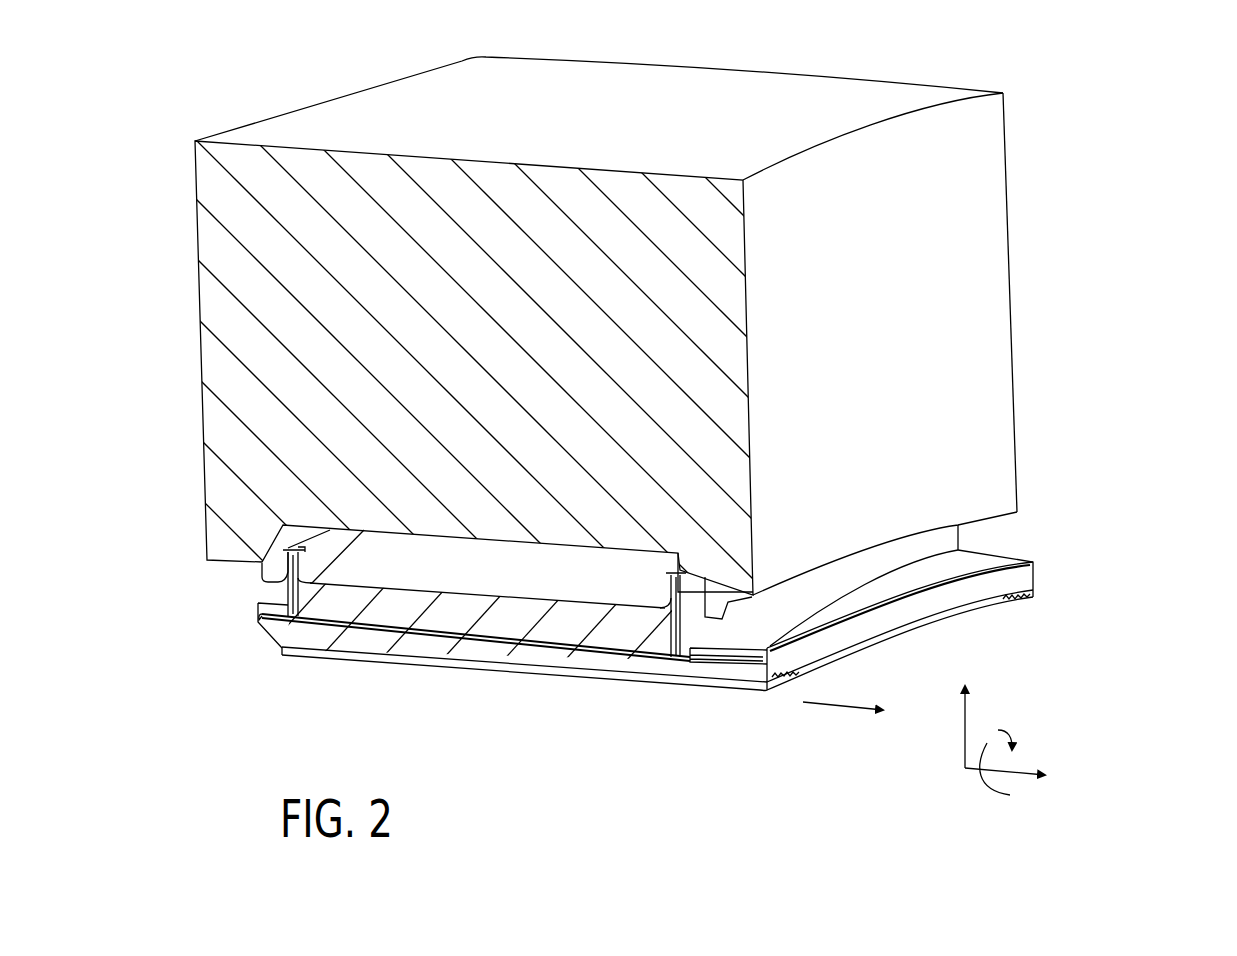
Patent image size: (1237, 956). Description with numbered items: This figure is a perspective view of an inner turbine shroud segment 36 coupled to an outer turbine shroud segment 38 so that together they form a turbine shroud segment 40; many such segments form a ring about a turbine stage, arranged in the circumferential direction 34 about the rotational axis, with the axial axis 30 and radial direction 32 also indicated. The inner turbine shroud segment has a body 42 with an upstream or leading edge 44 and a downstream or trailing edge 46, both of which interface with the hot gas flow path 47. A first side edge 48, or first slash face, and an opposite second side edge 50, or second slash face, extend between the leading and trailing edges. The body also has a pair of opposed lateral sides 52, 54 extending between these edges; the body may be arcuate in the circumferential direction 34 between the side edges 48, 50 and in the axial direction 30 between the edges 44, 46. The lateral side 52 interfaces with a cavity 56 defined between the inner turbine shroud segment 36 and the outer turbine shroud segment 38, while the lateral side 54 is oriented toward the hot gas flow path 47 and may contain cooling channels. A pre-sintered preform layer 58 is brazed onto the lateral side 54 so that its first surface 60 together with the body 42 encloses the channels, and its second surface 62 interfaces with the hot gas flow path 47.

The axial axis 30 is at (977, 770).
The radial direction 32 is at (965, 732).
The circumferential direction 34 is at (998, 730).
The inner turbine shroud segment 36 is at (1035, 598).
The outer turbine shroud segment 38 is at (1007, 142).
The turbine shroud segment 40 is at (1135, 240).
The body 42 is at (488, 620).
The leading edge 44 is at (278, 643).
The trailing edge 46 is at (967, 598).
The hot gas flow path 47 is at (833, 707).
The first side edge 48 is at (631, 667).
The second side edge 50 is at (1034, 562).
The lateral side 52 is at (593, 580).
The lateral side 54 is at (693, 683).
The cavity 56 is at (557, 577).
The pre-sintered preform layer 58 is at (572, 672).
The first surface 60 is at (408, 658).
The second surface 62 is at (371, 653).